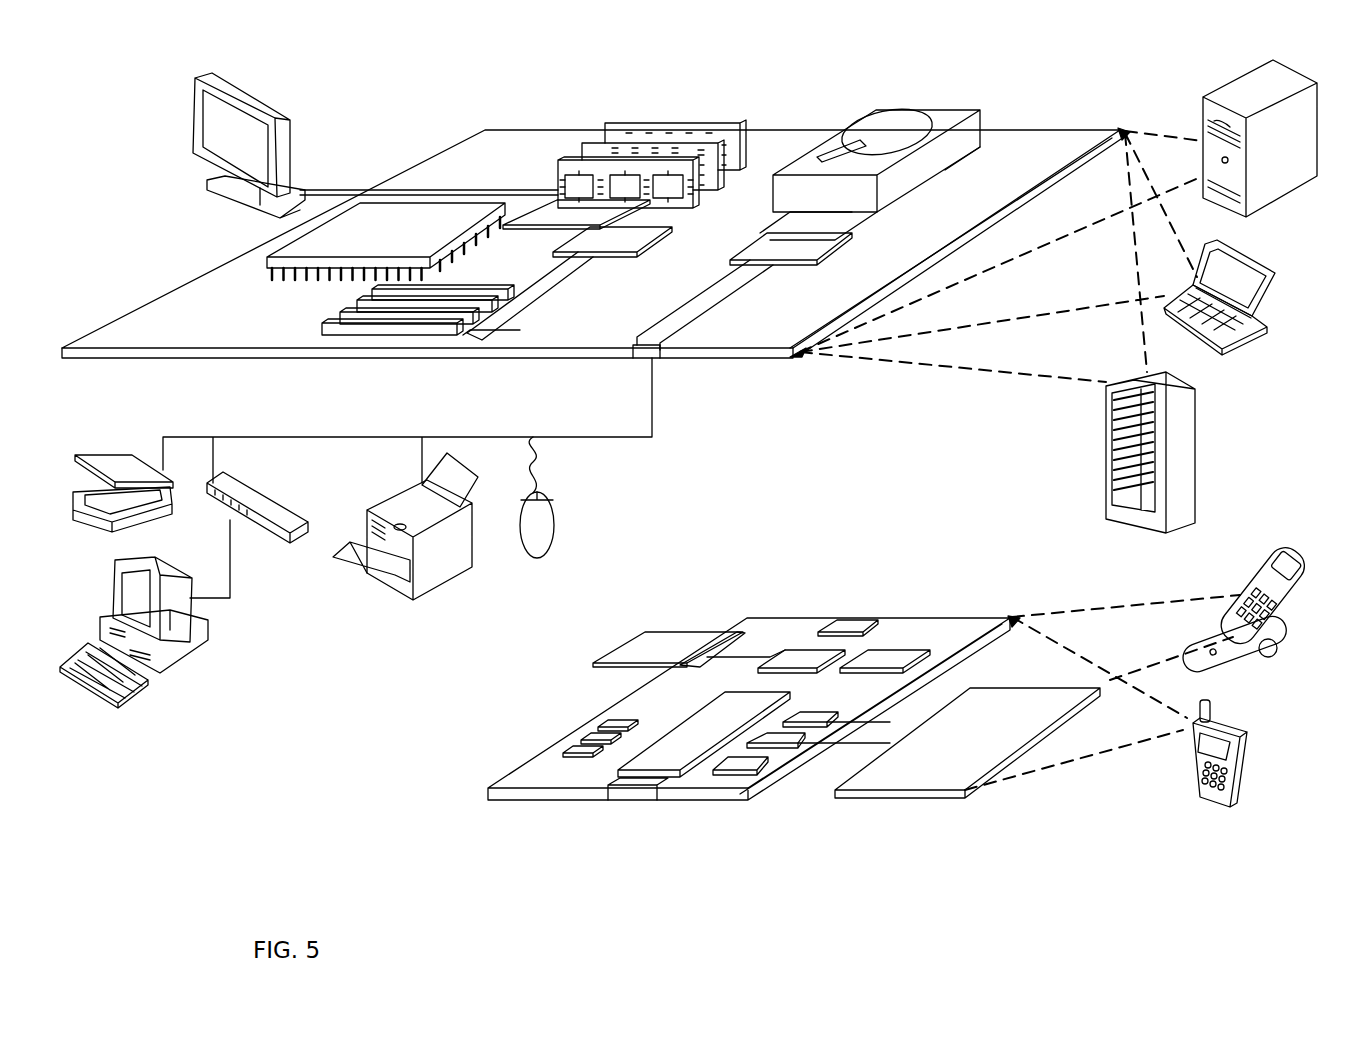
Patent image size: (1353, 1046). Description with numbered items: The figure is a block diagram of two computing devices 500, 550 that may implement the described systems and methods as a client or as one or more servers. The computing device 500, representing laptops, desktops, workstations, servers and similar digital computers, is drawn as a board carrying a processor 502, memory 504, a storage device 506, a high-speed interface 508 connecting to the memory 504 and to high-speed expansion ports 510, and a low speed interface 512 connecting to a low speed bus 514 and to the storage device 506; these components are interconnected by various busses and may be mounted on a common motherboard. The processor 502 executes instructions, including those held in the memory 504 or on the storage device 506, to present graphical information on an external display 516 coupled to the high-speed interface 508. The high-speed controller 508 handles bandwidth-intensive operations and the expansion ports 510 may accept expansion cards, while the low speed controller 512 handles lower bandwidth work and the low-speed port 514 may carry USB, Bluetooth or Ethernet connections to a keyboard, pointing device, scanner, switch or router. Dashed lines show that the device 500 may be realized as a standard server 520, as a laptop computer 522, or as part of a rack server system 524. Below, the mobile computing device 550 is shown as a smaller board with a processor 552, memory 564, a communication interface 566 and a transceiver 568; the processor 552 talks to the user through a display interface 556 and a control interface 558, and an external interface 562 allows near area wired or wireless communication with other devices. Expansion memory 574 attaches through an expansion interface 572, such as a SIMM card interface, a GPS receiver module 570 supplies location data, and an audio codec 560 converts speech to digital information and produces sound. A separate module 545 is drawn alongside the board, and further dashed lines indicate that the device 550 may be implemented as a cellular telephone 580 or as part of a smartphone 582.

The computing device 500 is at (400, 96).
The processor 502 is at (267, 257).
The memory 504 is at (613, 122).
The storage device 506 is at (857, 105).
The high-speed interface 508 is at (590, 238).
The high-speed expansion ports 510 is at (343, 314).
The low speed interface 512 is at (770, 240).
The low speed bus 514 is at (655, 348).
The display 516 is at (193, 80).
The standard server 520 is at (1203, 118).
The laptop computer 522 is at (1275, 273).
The rack server system 524 is at (1108, 480).
The wireless communication module 545 is at (925, 773).
The computing device 550 is at (460, 805).
The processor 552 is at (677, 753).
The display interface 556 is at (747, 760).
The control interface 558 is at (783, 740).
The audio codec 560 is at (808, 717).
The external interface 562 is at (638, 787).
The memory 564 is at (575, 742).
The communication interface 566 is at (802, 653).
The transceiver 568 is at (885, 655).
The GPS receiver module 570 is at (853, 628).
The expansion interface 572 is at (727, 632).
The expansion memory 574 is at (637, 633).
The cellular telephone 580 is at (1253, 570).
The smartphone 582 is at (1195, 757).